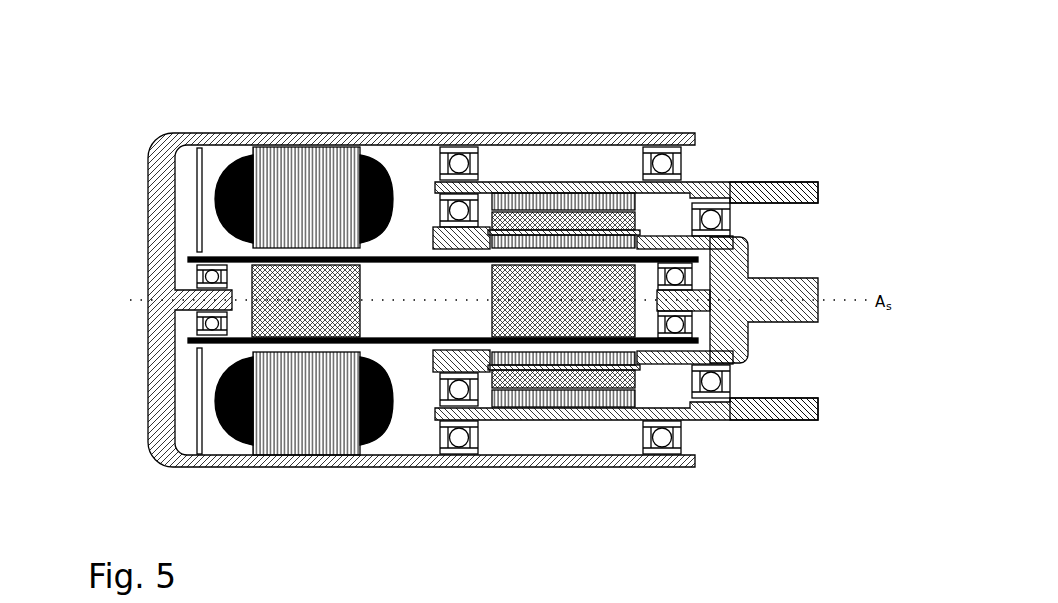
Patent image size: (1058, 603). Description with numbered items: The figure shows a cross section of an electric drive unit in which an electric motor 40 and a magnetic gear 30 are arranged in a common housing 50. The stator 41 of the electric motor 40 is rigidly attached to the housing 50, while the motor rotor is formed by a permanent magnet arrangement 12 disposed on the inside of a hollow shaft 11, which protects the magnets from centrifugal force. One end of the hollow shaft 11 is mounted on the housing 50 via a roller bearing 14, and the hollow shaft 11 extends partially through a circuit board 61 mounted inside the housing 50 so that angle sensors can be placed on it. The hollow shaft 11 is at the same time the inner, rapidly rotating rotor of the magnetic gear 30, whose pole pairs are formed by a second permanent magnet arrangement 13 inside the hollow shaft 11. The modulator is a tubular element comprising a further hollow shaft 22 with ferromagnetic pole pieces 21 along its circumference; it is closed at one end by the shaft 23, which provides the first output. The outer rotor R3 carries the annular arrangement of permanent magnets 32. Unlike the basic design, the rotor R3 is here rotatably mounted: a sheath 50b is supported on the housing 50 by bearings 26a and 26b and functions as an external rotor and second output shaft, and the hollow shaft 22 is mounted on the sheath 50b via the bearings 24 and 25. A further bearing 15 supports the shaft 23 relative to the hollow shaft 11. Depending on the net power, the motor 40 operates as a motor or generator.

The housing 50 is at (173, 134).
The circuit board 61 is at (202, 403).
The roller bearing 14 is at (212, 277).
The electric motor 40 is at (302, 243).
The stator 41 is at (272, 150).
The permanent magnet arrangement 12 is at (337, 310).
The hollow shaft 11 is at (412, 256).
The magnetic gear 30 is at (617, 289).
The rotor R3 is at (587, 187).
The sheath 50b is at (843, 158).
The permanent magnets 32 is at (640, 222).
The pole pieces 21 is at (637, 366).
The hollow shaft 22 is at (433, 360).
The second permanent magnet arrangement 13 is at (510, 275).
The shaft 23 is at (818, 279).
The bearing 15 is at (680, 322).
The roller bearing 25 is at (712, 380).
The roller bearing 24 is at (460, 392).
The bearing 26a is at (460, 440).
The bearing 26b is at (662, 440).